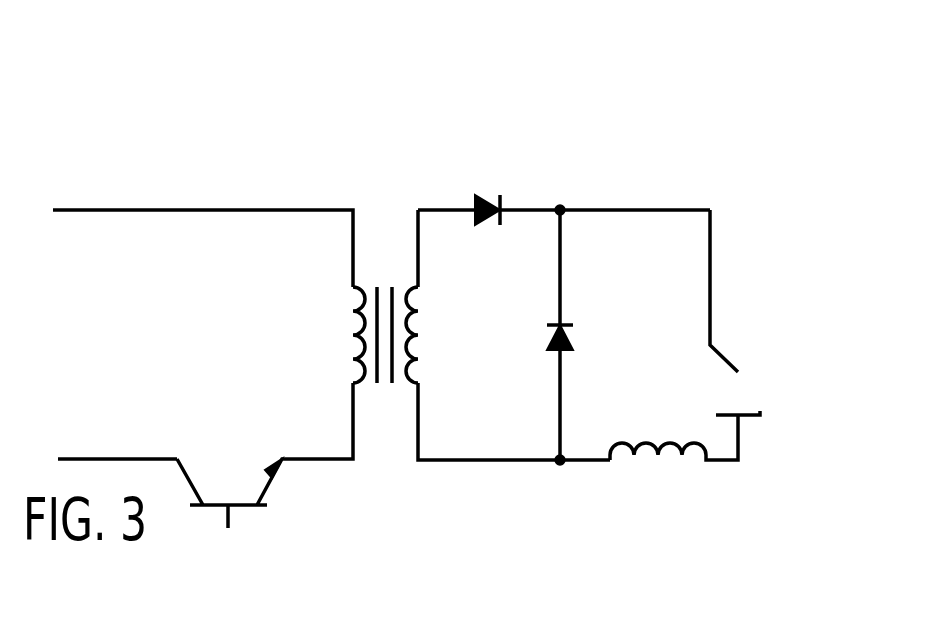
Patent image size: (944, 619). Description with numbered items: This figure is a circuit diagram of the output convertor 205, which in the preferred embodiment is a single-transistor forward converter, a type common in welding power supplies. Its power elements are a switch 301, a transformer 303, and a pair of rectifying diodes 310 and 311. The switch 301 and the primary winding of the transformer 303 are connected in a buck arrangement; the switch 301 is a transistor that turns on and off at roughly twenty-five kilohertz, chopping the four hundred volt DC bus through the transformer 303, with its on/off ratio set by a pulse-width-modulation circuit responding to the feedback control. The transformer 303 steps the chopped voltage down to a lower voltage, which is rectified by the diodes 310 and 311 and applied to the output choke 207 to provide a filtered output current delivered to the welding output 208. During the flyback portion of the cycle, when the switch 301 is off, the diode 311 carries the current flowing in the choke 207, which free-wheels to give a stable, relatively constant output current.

The output convertor 205 is at (393, 118).
The switch 301 is at (245, 507).
The transformer 303 is at (355, 286).
The rectifying diode 310 is at (489, 200).
The rectifying diode 311 is at (571, 330).
The output choke 207 is at (660, 462).
The welding output 208 is at (738, 372).